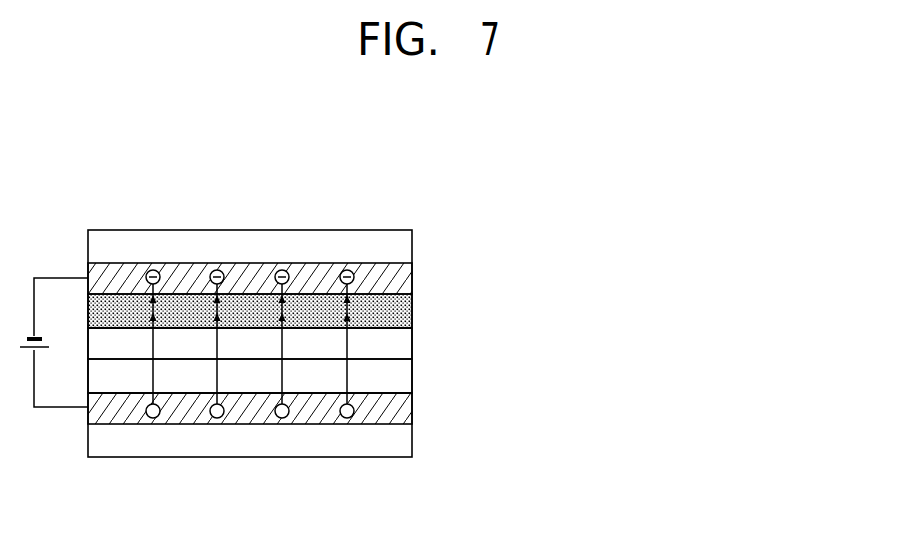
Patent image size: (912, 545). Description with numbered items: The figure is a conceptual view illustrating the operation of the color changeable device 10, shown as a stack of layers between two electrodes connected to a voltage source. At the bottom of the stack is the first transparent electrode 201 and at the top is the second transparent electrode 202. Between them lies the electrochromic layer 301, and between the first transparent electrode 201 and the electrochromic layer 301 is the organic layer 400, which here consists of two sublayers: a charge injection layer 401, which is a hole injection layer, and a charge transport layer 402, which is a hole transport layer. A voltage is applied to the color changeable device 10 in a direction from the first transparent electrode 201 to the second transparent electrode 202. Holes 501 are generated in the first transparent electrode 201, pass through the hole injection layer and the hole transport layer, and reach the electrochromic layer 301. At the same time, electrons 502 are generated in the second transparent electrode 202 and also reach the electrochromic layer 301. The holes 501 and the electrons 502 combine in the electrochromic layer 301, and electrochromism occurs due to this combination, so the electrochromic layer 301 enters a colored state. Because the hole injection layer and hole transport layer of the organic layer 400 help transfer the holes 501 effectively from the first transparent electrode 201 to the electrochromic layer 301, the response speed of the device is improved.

The color changeable device 10 is at (390, 176).
The second transparent electrode 202 is at (405, 279).
The electrochromic layer 301 is at (405, 310).
The charge transport layer 402 is at (405, 345).
The charge injection layer 401 is at (405, 378).
The organic layer 400 is at (771, 328).
The first transparent electrode 201 is at (405, 408).
The electrons 502 is at (152, 270).
The holes 501 is at (153, 418).